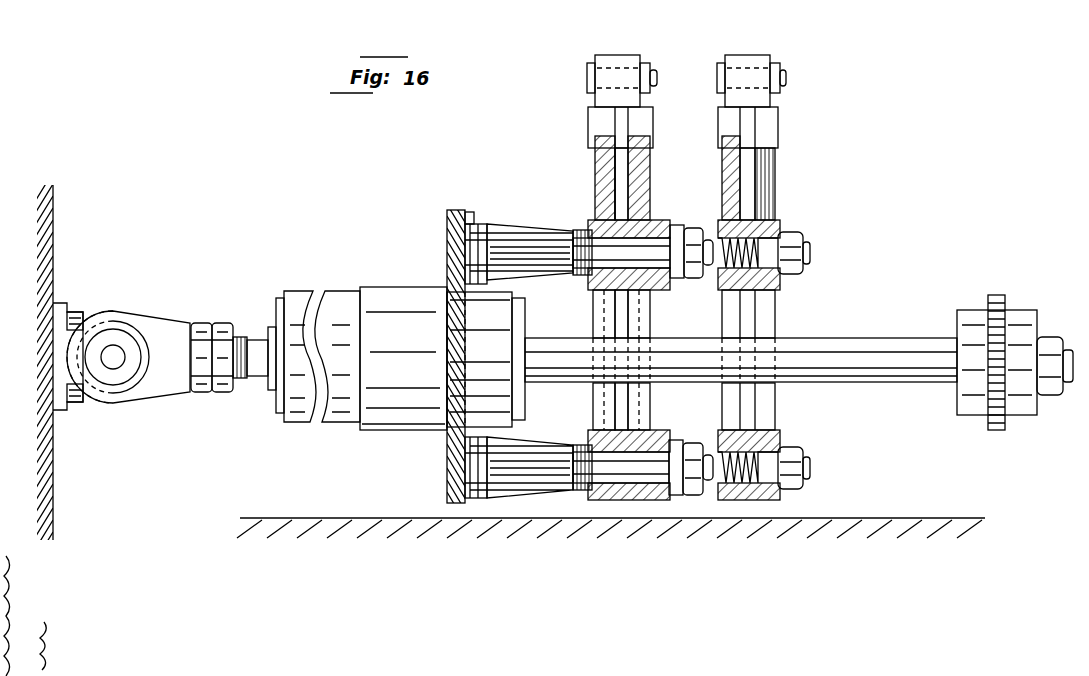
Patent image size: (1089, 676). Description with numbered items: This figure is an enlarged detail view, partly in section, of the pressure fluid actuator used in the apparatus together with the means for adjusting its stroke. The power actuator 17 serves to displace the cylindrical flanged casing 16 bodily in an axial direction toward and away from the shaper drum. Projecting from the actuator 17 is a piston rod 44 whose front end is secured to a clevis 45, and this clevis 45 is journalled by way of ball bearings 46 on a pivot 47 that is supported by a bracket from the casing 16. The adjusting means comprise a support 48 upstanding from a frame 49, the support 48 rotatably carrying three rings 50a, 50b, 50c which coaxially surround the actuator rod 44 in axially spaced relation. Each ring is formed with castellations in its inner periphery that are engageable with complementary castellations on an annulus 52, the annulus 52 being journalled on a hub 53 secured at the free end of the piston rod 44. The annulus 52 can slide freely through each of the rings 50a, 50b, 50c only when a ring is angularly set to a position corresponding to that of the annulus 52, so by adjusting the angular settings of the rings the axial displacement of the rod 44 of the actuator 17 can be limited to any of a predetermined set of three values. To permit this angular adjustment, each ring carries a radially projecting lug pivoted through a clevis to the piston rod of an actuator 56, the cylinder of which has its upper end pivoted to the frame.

The casing 16 is at (50, 246).
The power actuator 17 is at (403, 323).
The piston rod 44 is at (258, 347).
The clevis 45 is at (97, 345).
The ball bearings 46 is at (123, 327).
The pivot 47 is at (115, 367).
The support 48 is at (461, 212).
The frame 49 is at (508, 520).
The ring 50a is at (745, 500).
The ring 50b is at (663, 500).
The ring 50c is at (616, 500).
The annulus 52 is at (999, 297).
The hub 53 is at (1022, 398).
The actuator 56 is at (720, 131).